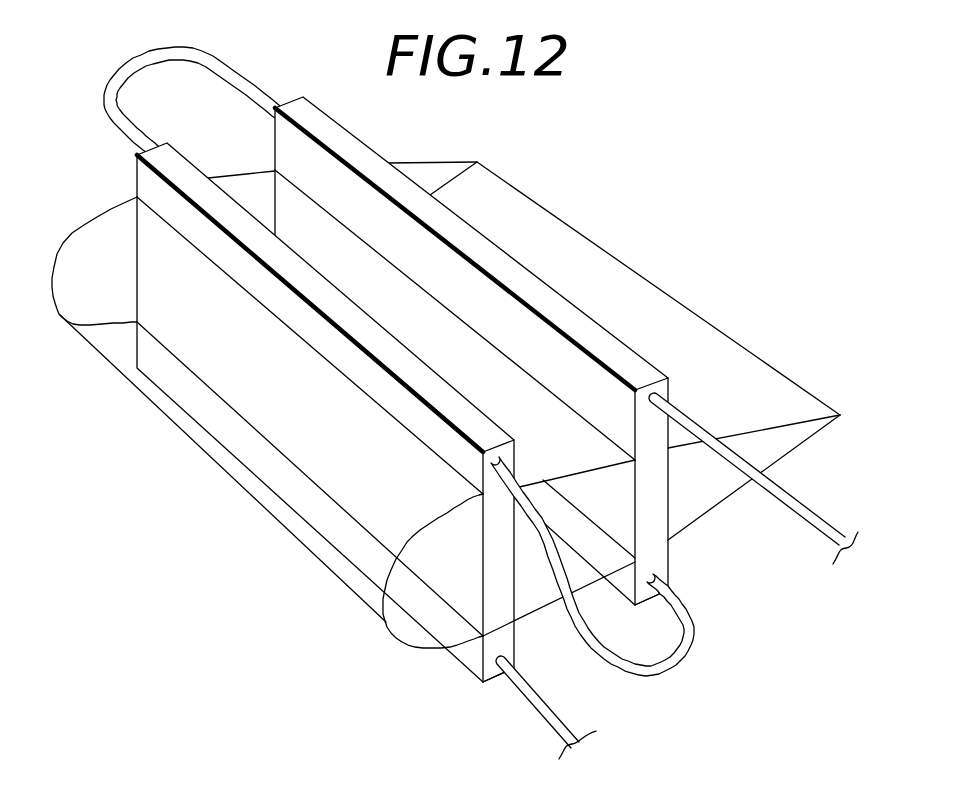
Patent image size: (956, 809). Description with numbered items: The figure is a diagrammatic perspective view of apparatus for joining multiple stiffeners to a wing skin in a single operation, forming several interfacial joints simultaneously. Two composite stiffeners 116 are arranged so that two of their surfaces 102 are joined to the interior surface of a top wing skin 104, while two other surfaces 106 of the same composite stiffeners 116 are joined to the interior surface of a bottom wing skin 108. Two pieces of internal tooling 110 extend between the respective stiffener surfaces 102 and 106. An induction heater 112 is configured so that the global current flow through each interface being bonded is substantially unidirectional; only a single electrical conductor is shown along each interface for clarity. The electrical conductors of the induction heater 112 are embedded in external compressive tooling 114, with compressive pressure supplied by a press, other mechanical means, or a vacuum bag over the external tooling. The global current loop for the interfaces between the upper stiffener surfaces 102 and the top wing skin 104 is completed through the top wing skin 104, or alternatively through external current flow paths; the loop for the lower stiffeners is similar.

The stiffener surfaces 102 is at (497, 491).
The top wing skin 104 is at (732, 433).
The stiffener surfaces 106 is at (655, 550).
The bottom wing skin 108 is at (532, 617).
The internal tooling 110 is at (666, 483).
The induction heater 112 is at (790, 501).
The external compressive tooling 114 is at (400, 291).
The composite stiffeners 116 is at (671, 513).